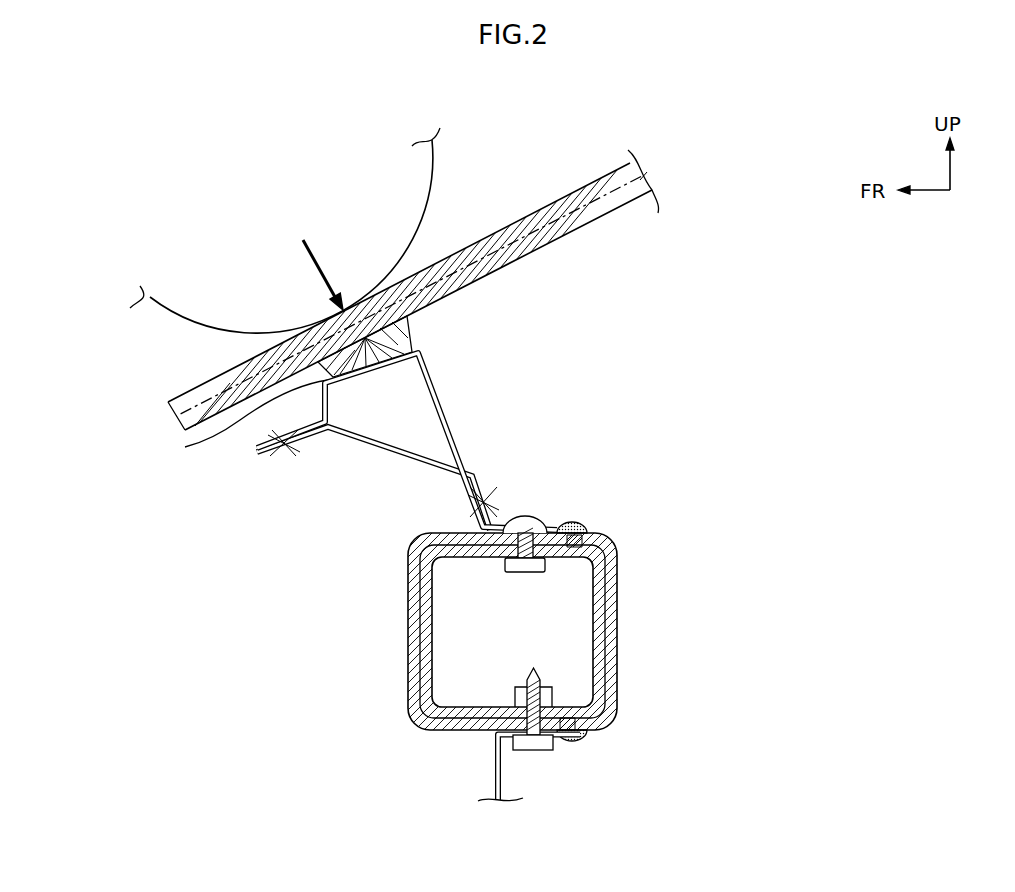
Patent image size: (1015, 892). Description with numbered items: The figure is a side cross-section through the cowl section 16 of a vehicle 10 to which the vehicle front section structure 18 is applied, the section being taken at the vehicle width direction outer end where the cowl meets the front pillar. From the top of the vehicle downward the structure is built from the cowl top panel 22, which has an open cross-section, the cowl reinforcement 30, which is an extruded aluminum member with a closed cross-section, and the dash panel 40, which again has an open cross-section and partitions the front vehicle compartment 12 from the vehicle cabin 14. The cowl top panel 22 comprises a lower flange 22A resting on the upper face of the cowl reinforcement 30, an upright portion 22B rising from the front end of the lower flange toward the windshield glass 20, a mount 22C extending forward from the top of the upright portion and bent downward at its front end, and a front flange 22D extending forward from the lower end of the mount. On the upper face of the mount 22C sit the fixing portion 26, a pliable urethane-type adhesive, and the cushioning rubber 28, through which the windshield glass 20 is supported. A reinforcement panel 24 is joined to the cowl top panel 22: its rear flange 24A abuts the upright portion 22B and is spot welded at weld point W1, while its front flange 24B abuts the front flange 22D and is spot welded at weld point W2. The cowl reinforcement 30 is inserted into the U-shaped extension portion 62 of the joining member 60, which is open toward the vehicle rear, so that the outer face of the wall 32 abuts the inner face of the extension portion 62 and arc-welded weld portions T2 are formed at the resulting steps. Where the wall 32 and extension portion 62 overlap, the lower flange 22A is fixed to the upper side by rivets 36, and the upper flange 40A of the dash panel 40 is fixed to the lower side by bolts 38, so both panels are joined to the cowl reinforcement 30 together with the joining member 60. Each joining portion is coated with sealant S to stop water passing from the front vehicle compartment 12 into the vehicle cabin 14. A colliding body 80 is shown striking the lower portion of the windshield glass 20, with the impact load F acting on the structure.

The vehicle 10 is at (413, 261).
The front vehicle compartment 12 is at (176, 672).
The vehicle cabin 14 is at (860, 672).
The cowl section 16 is at (665, 390).
The vehicle front section structure 18 is at (413, 274).
The windshield glass 20 is at (451, 252).
The cowl top panel 22 is at (385, 433).
The lower flange 22A is at (557, 530).
The upright portion 22B is at (444, 441).
The mount 22C is at (444, 433).
The front flange 22D is at (385, 433).
The reinforcement panel 24 is at (337, 488).
The rear flange 24A is at (470, 503).
The front flange 24B is at (337, 486).
The fixing portion 26 is at (240, 420).
The cushioning rubber 28 is at (413, 345).
The cowl reinforcement 30 is at (518, 631).
The wall 32 is at (518, 631).
The rivets 36 is at (524, 522).
The bolts 38 is at (534, 744).
The dash panel 40 is at (479, 764).
The upper flange 40A is at (512, 727).
The joining member 60 is at (518, 631).
The extension portion 62 is at (408, 632).
The colliding body 80 is at (149, 309).
The impact load F is at (333, 270).
The weld point W1 is at (485, 490).
The weld point W2 is at (288, 450).
The sealant S is at (575, 542).
The weld portions T2 is at (585, 531).